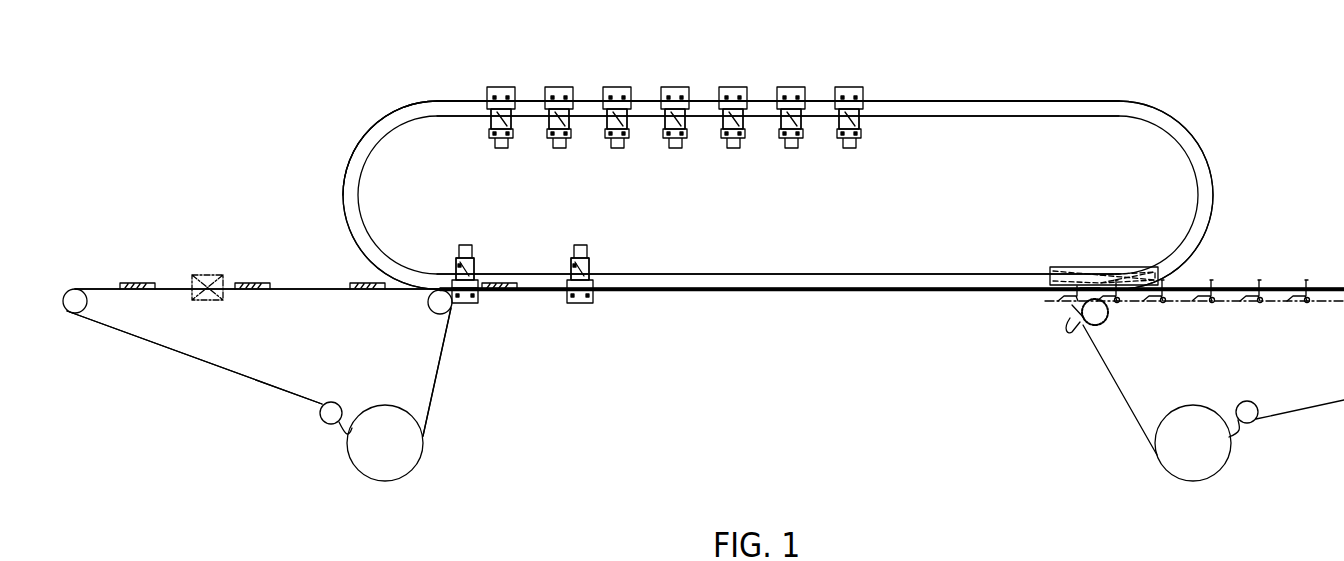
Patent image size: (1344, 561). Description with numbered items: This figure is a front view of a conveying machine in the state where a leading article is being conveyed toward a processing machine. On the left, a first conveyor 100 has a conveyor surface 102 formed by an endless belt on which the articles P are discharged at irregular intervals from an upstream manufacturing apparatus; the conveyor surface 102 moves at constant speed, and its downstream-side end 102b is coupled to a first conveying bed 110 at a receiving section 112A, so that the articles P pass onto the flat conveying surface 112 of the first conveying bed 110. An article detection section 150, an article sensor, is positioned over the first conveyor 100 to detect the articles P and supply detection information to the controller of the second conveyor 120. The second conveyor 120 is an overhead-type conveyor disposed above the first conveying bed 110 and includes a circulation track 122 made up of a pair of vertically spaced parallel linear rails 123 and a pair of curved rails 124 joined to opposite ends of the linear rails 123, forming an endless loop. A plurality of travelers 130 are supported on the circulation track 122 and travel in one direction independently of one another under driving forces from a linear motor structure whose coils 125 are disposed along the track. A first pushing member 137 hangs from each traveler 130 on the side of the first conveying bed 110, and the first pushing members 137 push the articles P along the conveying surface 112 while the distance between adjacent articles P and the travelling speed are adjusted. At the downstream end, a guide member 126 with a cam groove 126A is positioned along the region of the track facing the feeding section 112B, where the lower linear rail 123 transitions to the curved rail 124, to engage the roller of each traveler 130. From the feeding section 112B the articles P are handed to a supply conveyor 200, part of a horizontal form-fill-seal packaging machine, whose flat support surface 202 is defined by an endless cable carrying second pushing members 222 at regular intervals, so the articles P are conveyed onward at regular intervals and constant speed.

The first conveyor 100 is at (209, 400).
The conveyor surface 102 is at (305, 288).
The downstream-side end 102b is at (447, 287).
The first conveying bed 110 is at (768, 291).
The conveying surface 112 is at (708, 287).
The receiving section 112A is at (465, 303).
The feeding section 112B is at (1088, 284).
The second conveyor 120 is at (437, 96).
The circulation track 122 is at (778, 195).
The linear rails 123 is at (995, 110).
The curved rails 124 is at (352, 150).
The coils 125 is at (915, 108).
The guide member 126 is at (1063, 270).
The cam groove 126A is at (1138, 267).
The travelers 130 is at (497, 86).
The first pushing members 137 is at (506, 112).
The article detection section 150 is at (207, 273).
The supply conveyor 200 is at (1292, 414).
The support surface 202 is at (1200, 288).
The second pushing members 222 is at (1262, 278).
The articles P is at (128, 283).